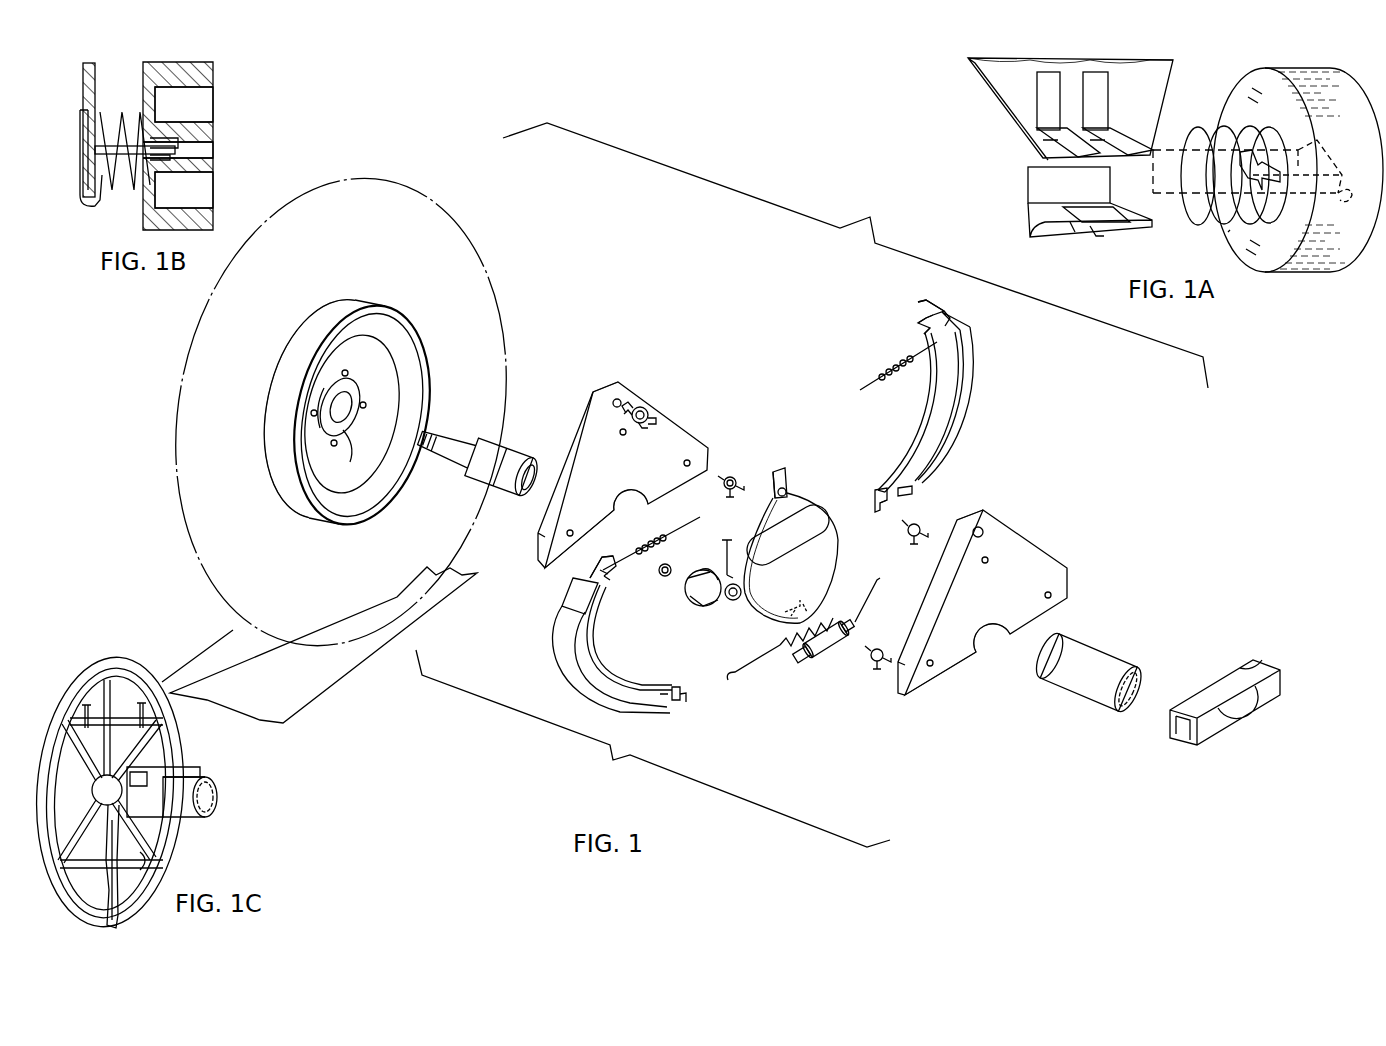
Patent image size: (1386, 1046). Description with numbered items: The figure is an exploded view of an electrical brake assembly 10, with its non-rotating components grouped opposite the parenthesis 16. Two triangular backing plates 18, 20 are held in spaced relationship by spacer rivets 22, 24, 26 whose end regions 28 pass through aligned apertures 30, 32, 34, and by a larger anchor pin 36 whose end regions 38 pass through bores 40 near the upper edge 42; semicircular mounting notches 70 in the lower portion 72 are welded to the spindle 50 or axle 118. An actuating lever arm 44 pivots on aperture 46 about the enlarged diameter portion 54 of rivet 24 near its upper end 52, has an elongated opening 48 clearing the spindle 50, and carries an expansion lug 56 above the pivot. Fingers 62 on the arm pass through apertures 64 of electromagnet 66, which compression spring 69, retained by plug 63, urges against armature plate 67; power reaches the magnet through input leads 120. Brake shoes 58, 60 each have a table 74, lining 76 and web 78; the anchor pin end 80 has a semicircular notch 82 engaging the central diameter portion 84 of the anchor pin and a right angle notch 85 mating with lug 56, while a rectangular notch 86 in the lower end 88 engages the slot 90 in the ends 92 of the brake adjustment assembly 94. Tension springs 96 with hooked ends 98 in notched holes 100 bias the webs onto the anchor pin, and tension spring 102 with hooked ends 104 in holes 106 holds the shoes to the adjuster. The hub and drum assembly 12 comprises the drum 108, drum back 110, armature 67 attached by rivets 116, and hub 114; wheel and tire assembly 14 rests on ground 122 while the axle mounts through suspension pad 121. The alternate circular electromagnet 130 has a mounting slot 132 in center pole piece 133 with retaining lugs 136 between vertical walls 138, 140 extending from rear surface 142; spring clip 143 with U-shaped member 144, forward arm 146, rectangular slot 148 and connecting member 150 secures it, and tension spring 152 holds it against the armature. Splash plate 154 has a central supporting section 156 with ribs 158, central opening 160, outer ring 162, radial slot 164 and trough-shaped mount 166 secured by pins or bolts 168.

In FIG. 1, the brake assembly 10 is at (870, 217).
In FIG. 1, the hub and drum assembly 12 is at (262, 441).
In FIG. 1, the wheel and tire assembly 14 is at (474, 229).
In FIG. 1, the non-rotating components 16 is at (612, 760).
In FIG. 1, the backing plate 18 is at (1028, 540).
In FIG. 1, the backing plate 20 is at (628, 392).
In FIG. 1, the spacer rivet 22 is at (872, 658).
In FIG. 1, the spacer rivet 24 is at (728, 477).
In FIG. 1, the spacer rivet 26 is at (917, 525).
In FIG. 1, the end regions 28 is at (730, 498).
In FIG. 1, the aperture 30 is at (573, 530).
In FIG. 1, the aperture 32 is at (620, 435).
In FIG. 1, the aperture 34 is at (684, 465).
In FIG. 1, the anchor pin 36 is at (653, 415).
In FIG. 1, the end regions 38 is at (641, 428).
In FIG. 1, the bore 40 is at (614, 398).
In FIG. 1, the upper edge 42 is at (594, 388).
In FIG. 1, the actuating lever arm 44 is at (820, 576).
In FIG. 1A, the actuating lever arm 44 is at (985, 95).
In FIG. 1, the aperture 46 is at (788, 491).
In FIG. 1, the elongated opening 48 is at (815, 530).
In FIG. 1, the spindle 50 is at (508, 492).
In FIG. 1, the upper end 52 is at (784, 468).
In FIG. 1, the enlarged diameter portion 54 is at (742, 472).
In FIG. 1, the expansion lug 56 is at (786, 478).
In FIG. 1, the brake shoe 58 is at (556, 662).
In FIG. 1, the brake shoe 60 is at (958, 437).
In FIG. 1, the fingers 62 is at (776, 615).
In FIG. 1A, the fingers 62 is at (1105, 160).
In FIG. 1B, the fingers 62 is at (190, 117).
In FIG. 1, the retaining plug 63 is at (660, 578).
In FIG. 1, the apertures 64 is at (698, 588).
In FIG. 1, the electromagnet 66 is at (700, 606).
In FIG. 1, the armature plate 67 is at (385, 370).
In FIG. 1, the compression spring 69 is at (732, 600).
In FIG. 1, the mounting notch 70 is at (642, 507).
In FIG. 1, the lower portion 72 is at (606, 508).
In FIG. 1, the table 74 is at (962, 326).
In FIG. 1, the brake lining 76 is at (972, 372).
In FIG. 1, the web 78 is at (926, 428).
In FIG. 1, the anchor pin end 80 is at (927, 300).
In FIG. 1, the semicircular notch 82 is at (918, 318).
In FIG. 1, the central diameter portion 84 is at (648, 404).
In FIG. 1, the right angle notch 85 is at (923, 332).
In FIG. 1, the rectangular notch 86 is at (876, 501).
In FIG. 1, the lower end 88 is at (875, 492).
In FIG. 1, the slot 90 is at (792, 662).
In FIG. 1, the ends 92 is at (804, 664).
In FIG. 1, the brake adjustment assembly 94 is at (780, 666).
In FIG. 1, the tension spring 96 is at (878, 372).
In FIG. 1, the hooked ends 98 is at (946, 314).
In FIG. 1, the notched holes 100 is at (966, 345).
In FIG. 1, the tension spring 102 is at (776, 646).
In FIG. 1, the hooked ends 104 is at (872, 590).
In FIG. 1, the holes 106 is at (912, 494).
In FIG. 1, the drum 108 is at (322, 343).
In FIG. 1, the drum back 110 is at (388, 325).
In FIG. 1, the hub 114 is at (345, 440).
In FIG. 1, the rivets 116 is at (335, 380).
In FIG. 1, the axle 118 is at (1100, 655).
In FIG. 1C, the axle 118 is at (216, 798).
In FIG. 1, the input leads 120 is at (722, 545).
In FIG. 1, the suspension mounting pad 121 is at (1250, 662).
In FIG. 1C, the suspension mounting pad 121 is at (200, 768).
In FIG. 1, the ground 122 is at (305, 703).
In FIG. 1A, the electromagnet 130 is at (1296, 70).
In FIG. 1B, the electromagnet 130 is at (178, 135).
In FIG. 1A, the mounting slot 132 is at (1212, 135).
In FIG. 1B, the center pole piece 133 is at (208, 132).
In FIG. 1A, the retaining lugs 136 is at (1262, 215).
In FIG. 1B, the retaining lugs 136 is at (130, 158).
In FIG. 1A, the vertical wall 138 is at (1318, 160).
In FIG. 1A, the vertical wall 140 is at (1340, 200).
In FIG. 1A, the rear surface 142 is at (1242, 98).
In FIG. 1B, the rear surface 142 is at (138, 78).
In FIG. 1A, the spring clip 143 is at (1028, 179).
In FIG. 1A, the U-shaped member 144 is at (1032, 224).
In FIG. 1A, the forward arm 146 is at (1148, 224).
In FIG. 1A, the rectangular slot 148 is at (1104, 228).
In FIG. 1B, the rectangular slot 148 is at (122, 120).
In FIG. 1A, the forward connecting member 150 is at (1105, 226).
In FIG. 1B, the forward connecting member 150 is at (178, 171).
In FIG. 1A, the tension spring 152 is at (1230, 234).
In FIG. 1B, the tension spring 152 is at (92, 205).
In FIG. 1C, the splash plate 154 is at (148, 670).
In FIG. 1C, the central supporting section 156 is at (160, 755).
In FIG. 1C, the ribs 158 is at (152, 866).
In FIG. 1C, the central opening 160 is at (93, 798).
In FIG. 1C, the outer ring 162 is at (104, 665).
In FIG. 1C, the radial slot 164 is at (118, 926).
In FIG. 1C, the trough-shaped mount 166 is at (150, 718).
In FIG. 1C, the pins or bolts 168 is at (118, 717).